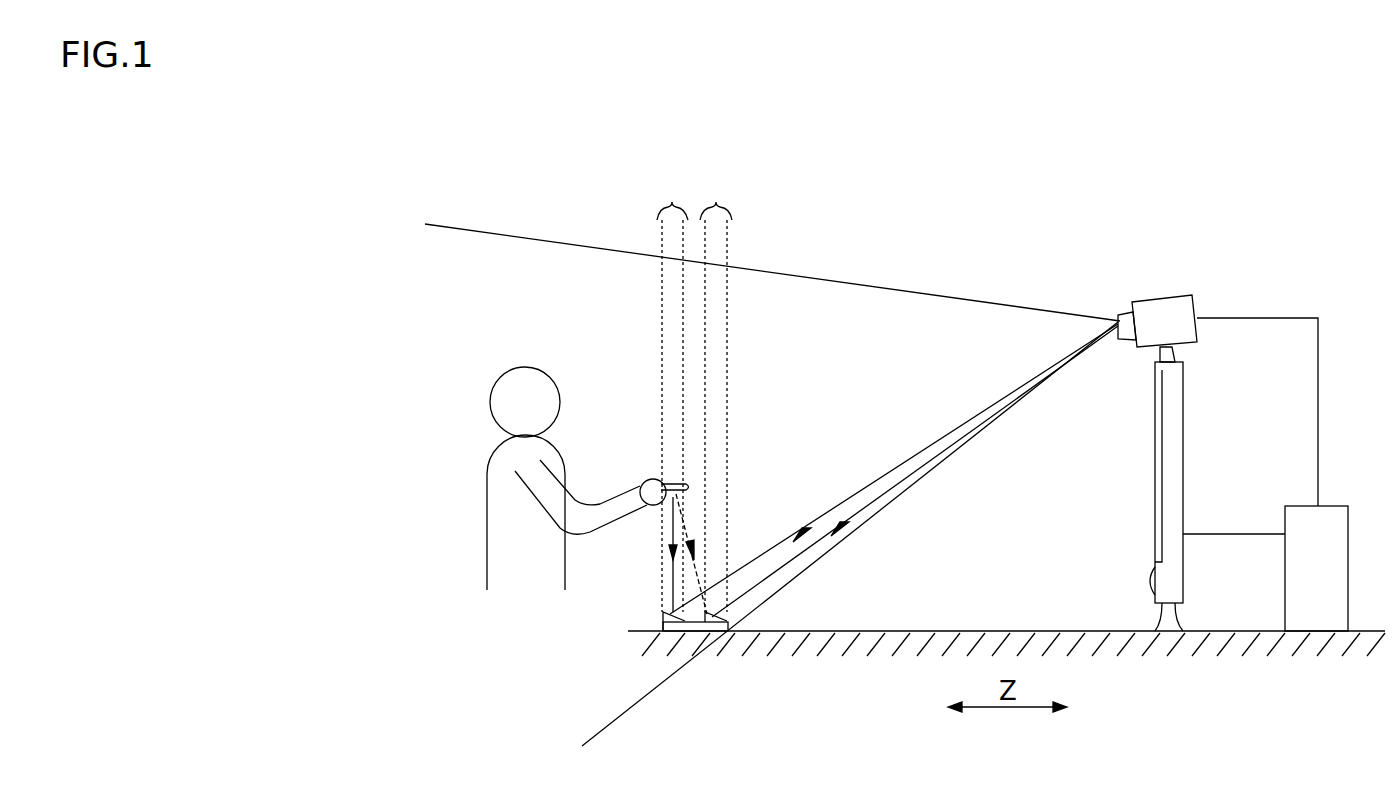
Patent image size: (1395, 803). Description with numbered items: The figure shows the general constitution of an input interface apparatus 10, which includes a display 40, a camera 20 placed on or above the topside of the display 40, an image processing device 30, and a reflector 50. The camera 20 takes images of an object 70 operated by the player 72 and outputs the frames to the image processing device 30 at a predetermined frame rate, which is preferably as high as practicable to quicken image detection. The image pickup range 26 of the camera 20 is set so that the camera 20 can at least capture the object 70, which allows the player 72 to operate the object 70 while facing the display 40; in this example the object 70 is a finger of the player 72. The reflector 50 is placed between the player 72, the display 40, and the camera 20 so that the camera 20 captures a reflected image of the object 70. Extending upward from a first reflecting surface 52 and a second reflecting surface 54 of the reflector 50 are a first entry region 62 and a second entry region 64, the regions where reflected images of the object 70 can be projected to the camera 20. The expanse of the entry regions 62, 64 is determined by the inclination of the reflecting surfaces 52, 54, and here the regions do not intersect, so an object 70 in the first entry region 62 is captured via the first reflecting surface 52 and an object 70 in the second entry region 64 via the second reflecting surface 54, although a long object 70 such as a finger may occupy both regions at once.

The input interface apparatus 10 is at (922, 798).
The camera 20 is at (1160, 298).
The image pickup range 26 is at (922, 290).
The image processing device 30 is at (1333, 506).
The display 40 is at (1155, 458).
The reflector 50 is at (719, 592).
The first reflecting surface 52 is at (666, 612).
The second reflecting surface 54 is at (728, 618).
The first entry region 62 is at (671, 393).
The second entry region 64 is at (715, 393).
The object 70 is at (667, 476).
The player 72 is at (487, 514).